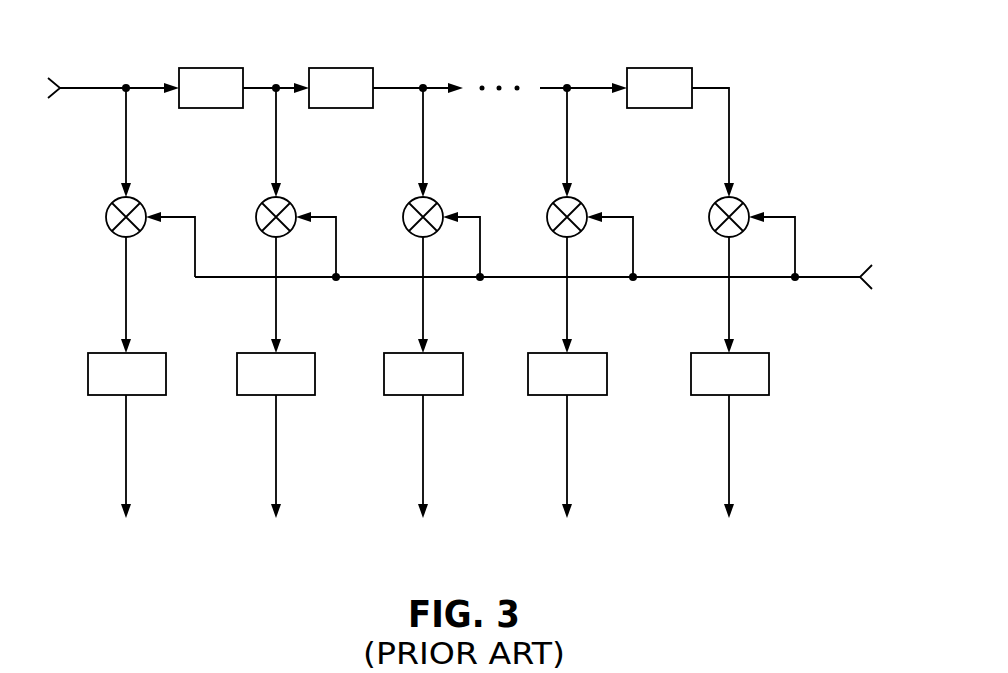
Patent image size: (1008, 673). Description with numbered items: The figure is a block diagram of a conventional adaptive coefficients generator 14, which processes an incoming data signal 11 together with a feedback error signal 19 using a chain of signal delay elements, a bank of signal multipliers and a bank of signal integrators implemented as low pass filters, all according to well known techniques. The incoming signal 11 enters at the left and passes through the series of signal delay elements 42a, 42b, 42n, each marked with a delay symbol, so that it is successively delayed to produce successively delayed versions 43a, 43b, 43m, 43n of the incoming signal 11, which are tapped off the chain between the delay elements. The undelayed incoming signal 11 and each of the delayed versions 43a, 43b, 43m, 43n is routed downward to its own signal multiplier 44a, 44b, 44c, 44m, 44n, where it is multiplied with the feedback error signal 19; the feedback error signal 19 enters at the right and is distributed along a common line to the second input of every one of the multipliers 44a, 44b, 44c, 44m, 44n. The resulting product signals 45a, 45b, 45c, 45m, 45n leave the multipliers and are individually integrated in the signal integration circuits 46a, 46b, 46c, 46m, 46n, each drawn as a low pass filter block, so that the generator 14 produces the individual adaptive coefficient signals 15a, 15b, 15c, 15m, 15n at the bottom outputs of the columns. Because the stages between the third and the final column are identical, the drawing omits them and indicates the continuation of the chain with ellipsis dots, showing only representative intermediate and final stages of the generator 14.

The incoming data signal 11 is at (80, 87).
The adaptive coefficients generator 14 is at (797, 567).
The feedback error signal 19 is at (836, 275).
The signal delay element 42a is at (207, 67).
The signal delay element 42b is at (337, 67).
The signal delay element 42n is at (654, 66).
The delayed version of the incoming signal 43a is at (263, 87).
The delayed version of the incoming signal 43b is at (383, 87).
The delayed version of the incoming signal 43m is at (543, 86).
The delayed version of the incoming signal 43n is at (710, 86).
The signal multiplier 44a is at (142, 203).
The signal multiplier 44b is at (290, 203).
The signal multiplier 44c is at (439, 203).
The signal multiplier 44m is at (582, 203).
The signal multiplier 44n is at (744, 203).
The product signal 45a is at (126, 262).
The product signal 45b is at (276, 262).
The product signal 45c is at (423, 262).
The product signal 45m is at (567, 262).
The product signal 45n is at (729, 262).
The signal integration circuit 46a is at (152, 352).
The signal integration circuit 46b is at (300, 352).
The signal integration circuit 46c is at (450, 352).
The signal integration circuit 46m is at (592, 352).
The signal integration circuit 46n is at (752, 352).
The adaptive coefficient signal 15a is at (126, 462).
The adaptive coefficient signal 15b is at (276, 462).
The adaptive coefficient signal 15c is at (423, 462).
The adaptive coefficient signal 15m is at (567, 462).
The adaptive coefficient signal 15n is at (729, 462).